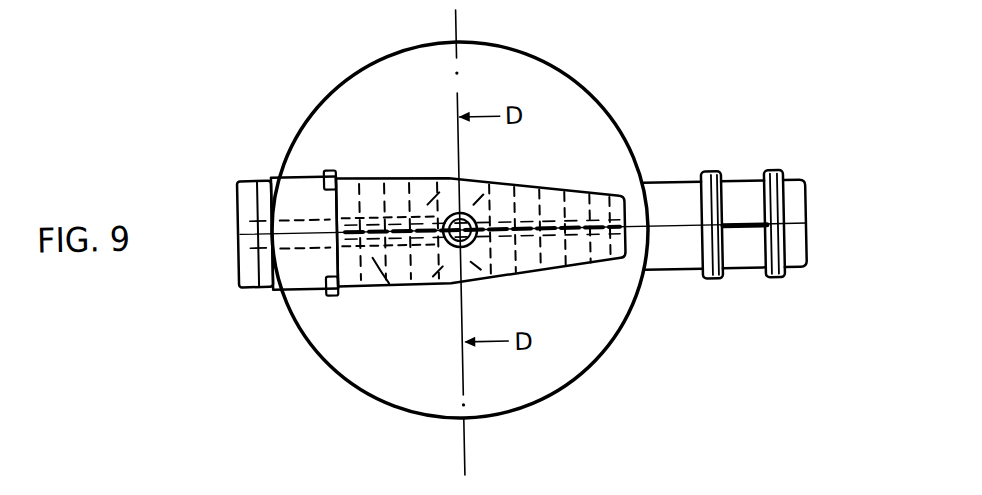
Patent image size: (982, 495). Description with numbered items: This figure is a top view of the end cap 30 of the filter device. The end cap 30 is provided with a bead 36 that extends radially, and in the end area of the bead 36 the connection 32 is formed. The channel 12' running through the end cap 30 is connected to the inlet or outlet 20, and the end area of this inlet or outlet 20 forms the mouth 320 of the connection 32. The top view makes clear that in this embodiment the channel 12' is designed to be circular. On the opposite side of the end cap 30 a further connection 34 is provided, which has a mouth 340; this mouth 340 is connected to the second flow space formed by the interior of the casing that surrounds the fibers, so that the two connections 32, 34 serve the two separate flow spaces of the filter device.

The end cap 30 is at (528, 96).
The connection 32 is at (318, 278).
The mouth 320 is at (238, 238).
The bead 36 is at (582, 194).
The channel 12' is at (511, 270).
The inlet or outlet 20 is at (372, 256).
The connection 34 is at (747, 186).
The mouth 340 is at (806, 220).